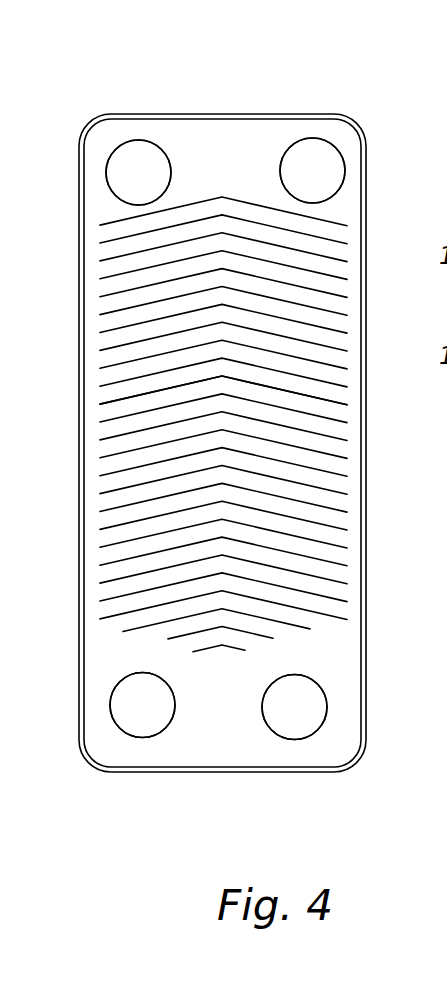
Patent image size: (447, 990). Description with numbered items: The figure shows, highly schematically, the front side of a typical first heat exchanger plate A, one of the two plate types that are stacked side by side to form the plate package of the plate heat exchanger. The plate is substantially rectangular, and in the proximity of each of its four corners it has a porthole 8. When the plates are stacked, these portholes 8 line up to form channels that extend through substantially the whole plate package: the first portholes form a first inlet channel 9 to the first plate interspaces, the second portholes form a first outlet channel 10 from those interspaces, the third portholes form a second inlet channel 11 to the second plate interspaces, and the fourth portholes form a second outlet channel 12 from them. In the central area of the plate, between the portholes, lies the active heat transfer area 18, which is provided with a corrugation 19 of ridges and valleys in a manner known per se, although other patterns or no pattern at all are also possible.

The first heat exchanger plate A is at (225, 118).
The portholes 8 is at (135, 147).
The first inlet channel 9 is at (157, 725).
The first outlet channel 10 is at (158, 163).
The second inlet channel 11 is at (307, 730).
The second outlet channel 12 is at (320, 145).
The heat transfer area 18 is at (138, 313).
The corrugation 19 is at (133, 400).